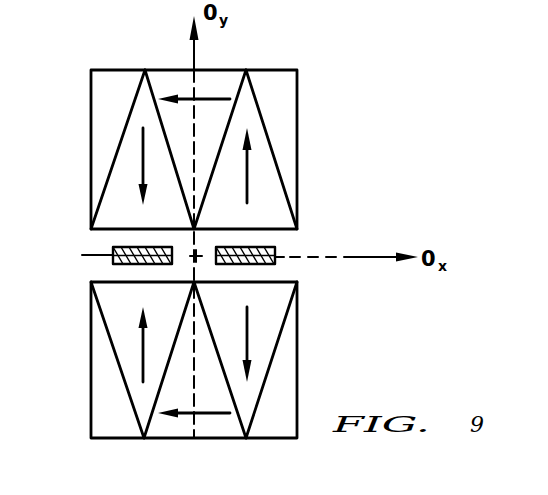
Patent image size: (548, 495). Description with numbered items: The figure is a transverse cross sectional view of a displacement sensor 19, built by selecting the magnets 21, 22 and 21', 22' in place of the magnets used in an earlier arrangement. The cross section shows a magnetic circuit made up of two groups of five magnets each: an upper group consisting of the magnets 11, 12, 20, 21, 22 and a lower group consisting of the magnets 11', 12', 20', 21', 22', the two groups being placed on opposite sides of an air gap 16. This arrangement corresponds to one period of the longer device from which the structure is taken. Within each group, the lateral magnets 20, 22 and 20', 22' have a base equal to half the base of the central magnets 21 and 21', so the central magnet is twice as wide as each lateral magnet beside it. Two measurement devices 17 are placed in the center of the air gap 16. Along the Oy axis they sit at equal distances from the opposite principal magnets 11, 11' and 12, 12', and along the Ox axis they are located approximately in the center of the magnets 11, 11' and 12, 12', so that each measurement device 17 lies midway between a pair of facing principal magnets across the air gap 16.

The magnet 11 is at (108, 149).
The magnet 12 is at (283, 149).
The magnet 11' is at (107, 360).
The magnet 12' is at (284, 360).
The air gap 16 is at (200, 385).
The measurement device 17 is at (113, 265).
The sensor 19 is at (252, 123).
The lateral magnet 20 is at (96, 123).
The central magnet 21 is at (182, 61).
The lateral magnet 22 is at (287, 123).
The lateral magnet 20' is at (95, 387).
The central magnet 21' is at (183, 451).
The lateral magnet 22' is at (290, 388).